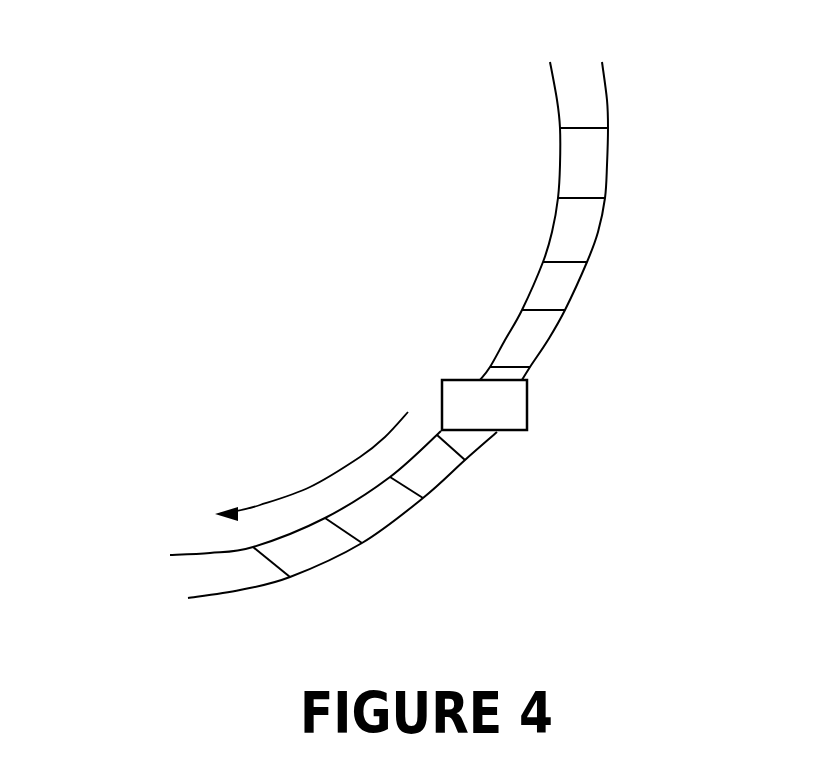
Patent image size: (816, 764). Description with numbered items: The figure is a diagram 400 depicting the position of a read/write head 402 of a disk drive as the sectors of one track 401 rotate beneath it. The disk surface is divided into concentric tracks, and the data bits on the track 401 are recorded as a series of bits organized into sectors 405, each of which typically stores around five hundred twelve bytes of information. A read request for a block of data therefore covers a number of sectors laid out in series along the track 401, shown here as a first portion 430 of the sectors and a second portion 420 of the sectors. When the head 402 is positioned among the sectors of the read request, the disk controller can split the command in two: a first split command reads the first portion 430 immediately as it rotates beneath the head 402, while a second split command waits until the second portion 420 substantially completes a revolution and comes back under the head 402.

The diagram 400 is at (92, 130).
The track 401 is at (610, 61).
The read/write head 402 is at (440, 382).
The sectors 405 is at (560, 157).
The second portion of the sectors 420 is at (490, 468).
The first portion of the sectors 430 is at (635, 72).